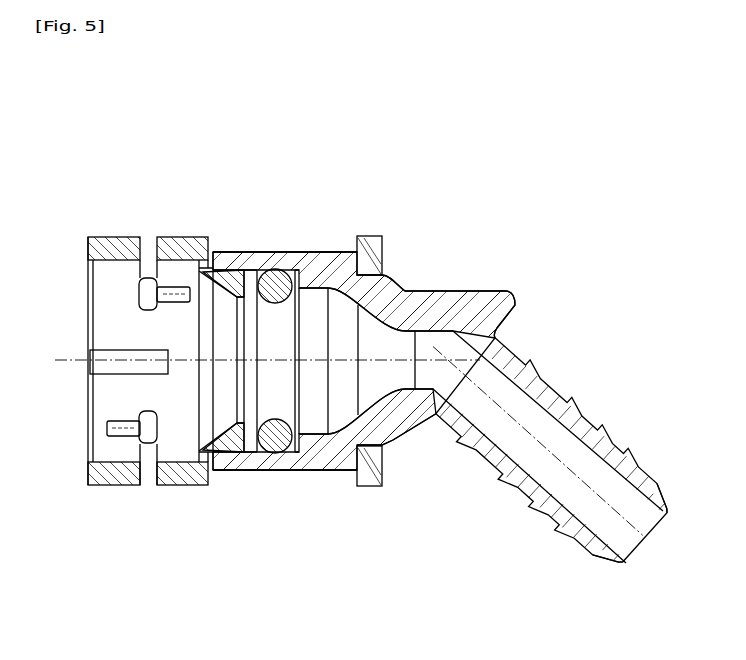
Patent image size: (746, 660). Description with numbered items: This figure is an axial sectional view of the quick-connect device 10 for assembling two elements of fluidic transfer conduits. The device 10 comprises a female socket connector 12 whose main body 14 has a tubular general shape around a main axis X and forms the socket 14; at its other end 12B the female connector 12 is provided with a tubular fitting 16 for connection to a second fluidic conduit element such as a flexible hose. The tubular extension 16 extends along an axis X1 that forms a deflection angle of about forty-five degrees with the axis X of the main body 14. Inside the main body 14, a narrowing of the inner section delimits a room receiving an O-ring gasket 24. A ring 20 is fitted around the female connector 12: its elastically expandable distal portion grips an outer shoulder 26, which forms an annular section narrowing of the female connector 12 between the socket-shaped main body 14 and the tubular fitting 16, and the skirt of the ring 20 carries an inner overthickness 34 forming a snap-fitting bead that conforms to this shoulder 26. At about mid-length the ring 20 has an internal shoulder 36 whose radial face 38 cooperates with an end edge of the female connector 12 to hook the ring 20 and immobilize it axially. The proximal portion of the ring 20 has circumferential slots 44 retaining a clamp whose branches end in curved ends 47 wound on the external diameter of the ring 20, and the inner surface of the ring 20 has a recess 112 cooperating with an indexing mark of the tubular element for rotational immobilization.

The quick-connect device 10 is at (397, 166).
The female socket connector 12 is at (299, 251).
The other end of the female connector 12B is at (637, 566).
The main body 14 is at (281, 251).
The tubular fitting 16 is at (492, 478).
The ring 20 is at (101, 239).
The O-ring gasket 24 is at (265, 455).
The outer shoulder 26 is at (378, 485).
The inner overthickness 34 is at (383, 257).
The internal shoulder 36 is at (229, 470).
The radial face 38 is at (210, 244).
The circumferential slots 44 is at (140, 488).
The curved end 47 is at (173, 262).
The recess 112 is at (130, 367).
The main axis X is at (377, 368).
The axis of the tubular extension X1 is at (515, 415).